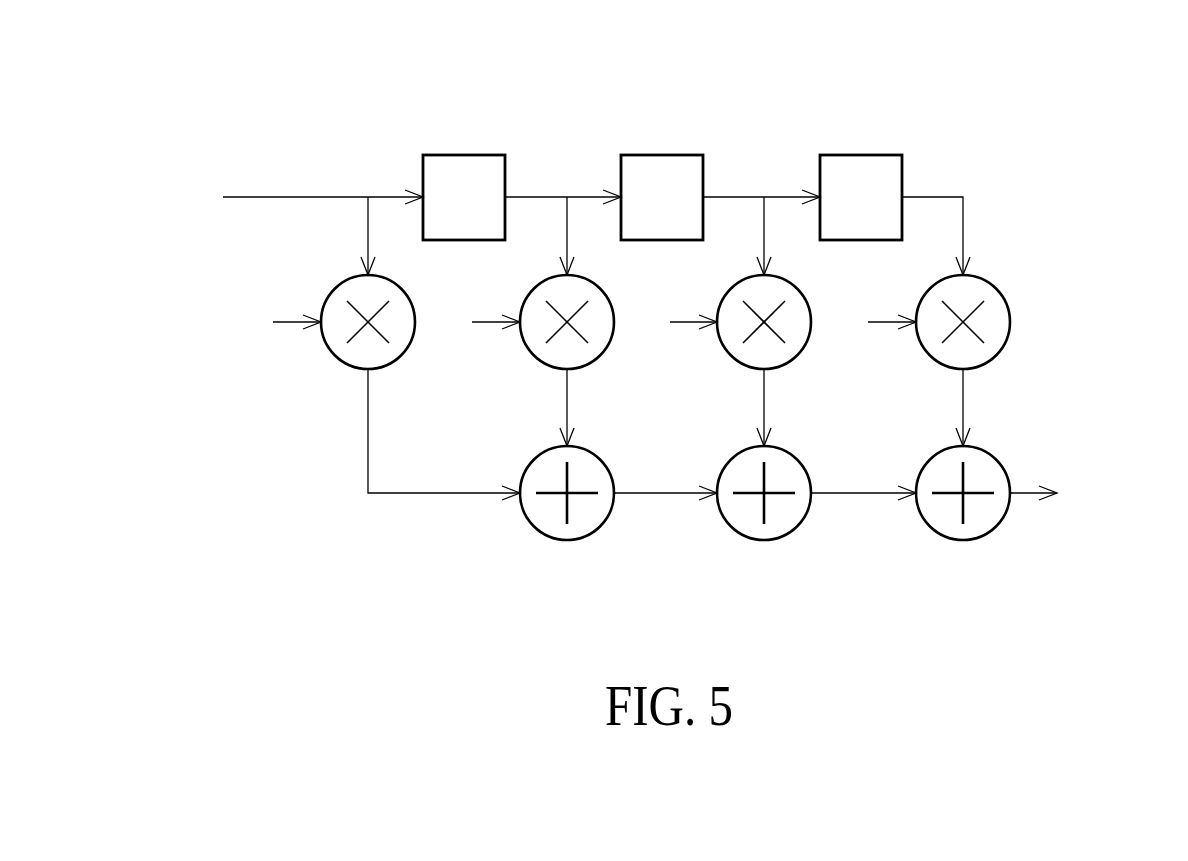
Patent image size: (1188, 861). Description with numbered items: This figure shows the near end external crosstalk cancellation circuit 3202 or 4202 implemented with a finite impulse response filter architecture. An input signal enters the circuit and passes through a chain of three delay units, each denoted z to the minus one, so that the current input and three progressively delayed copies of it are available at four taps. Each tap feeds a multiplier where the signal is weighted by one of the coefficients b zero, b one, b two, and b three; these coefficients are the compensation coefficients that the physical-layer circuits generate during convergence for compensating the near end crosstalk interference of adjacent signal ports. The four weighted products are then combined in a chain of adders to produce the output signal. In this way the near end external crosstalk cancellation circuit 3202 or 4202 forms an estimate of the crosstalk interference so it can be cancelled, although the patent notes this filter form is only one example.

The near end external crosstalk cancellation circuit 3202 is at (667, 295).
The near end external crosstalk cancellation circuit 4202 is at (667, 295).